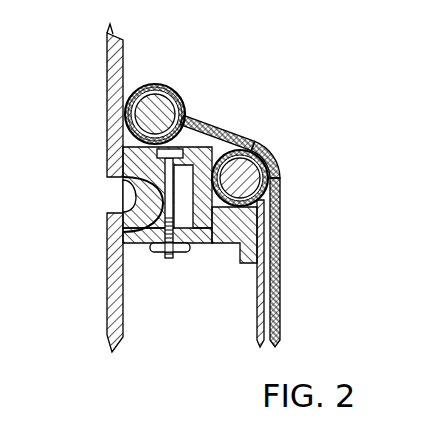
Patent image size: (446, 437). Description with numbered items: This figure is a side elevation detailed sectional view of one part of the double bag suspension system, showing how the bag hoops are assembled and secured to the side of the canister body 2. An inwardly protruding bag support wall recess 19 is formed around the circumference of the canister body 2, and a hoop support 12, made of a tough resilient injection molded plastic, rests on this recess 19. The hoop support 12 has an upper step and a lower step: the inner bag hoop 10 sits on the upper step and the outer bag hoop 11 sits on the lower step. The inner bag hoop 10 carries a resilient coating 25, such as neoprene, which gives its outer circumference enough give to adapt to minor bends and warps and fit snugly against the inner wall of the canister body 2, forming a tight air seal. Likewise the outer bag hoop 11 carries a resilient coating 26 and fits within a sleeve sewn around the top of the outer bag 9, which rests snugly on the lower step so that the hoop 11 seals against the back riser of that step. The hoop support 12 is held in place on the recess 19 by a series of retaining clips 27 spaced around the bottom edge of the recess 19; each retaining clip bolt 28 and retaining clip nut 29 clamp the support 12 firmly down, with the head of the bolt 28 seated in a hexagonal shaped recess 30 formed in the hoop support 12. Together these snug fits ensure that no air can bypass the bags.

The canister body 2 is at (107, 70).
The outer bag 9 is at (257, 318).
The inner bag hoop 10 is at (163, 112).
The outer bag hoop 11 is at (279, 170).
The hoop support 12 is at (126, 150).
The bag support wall recess 19 is at (140, 197).
The resilient coating 25 is at (163, 86).
The resilient coating 26 is at (266, 143).
The retaining clip 27 is at (217, 243).
The retaining clip bolt 28 is at (115, 233).
The retaining clip nut 29 is at (176, 253).
The hexagonal shaped recess 30 is at (205, 125).